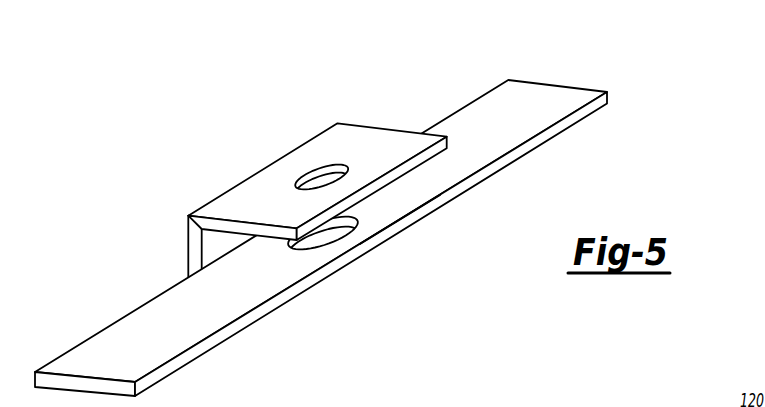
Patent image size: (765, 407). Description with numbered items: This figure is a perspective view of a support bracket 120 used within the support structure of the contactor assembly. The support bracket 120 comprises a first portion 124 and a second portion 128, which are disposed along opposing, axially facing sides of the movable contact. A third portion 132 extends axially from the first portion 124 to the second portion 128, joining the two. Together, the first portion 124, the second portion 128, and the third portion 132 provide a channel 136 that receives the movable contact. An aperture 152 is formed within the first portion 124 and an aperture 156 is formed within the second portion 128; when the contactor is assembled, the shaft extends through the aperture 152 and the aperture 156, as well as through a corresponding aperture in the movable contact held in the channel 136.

The support bracket 120 is at (331, 203).
The first portion 124 is at (252, 197).
The second portion 128 is at (473, 118).
The third portion 132 is at (193, 250).
The channel 136 is at (393, 204).
The aperture 152 is at (313, 170).
The aperture 156 is at (349, 231).